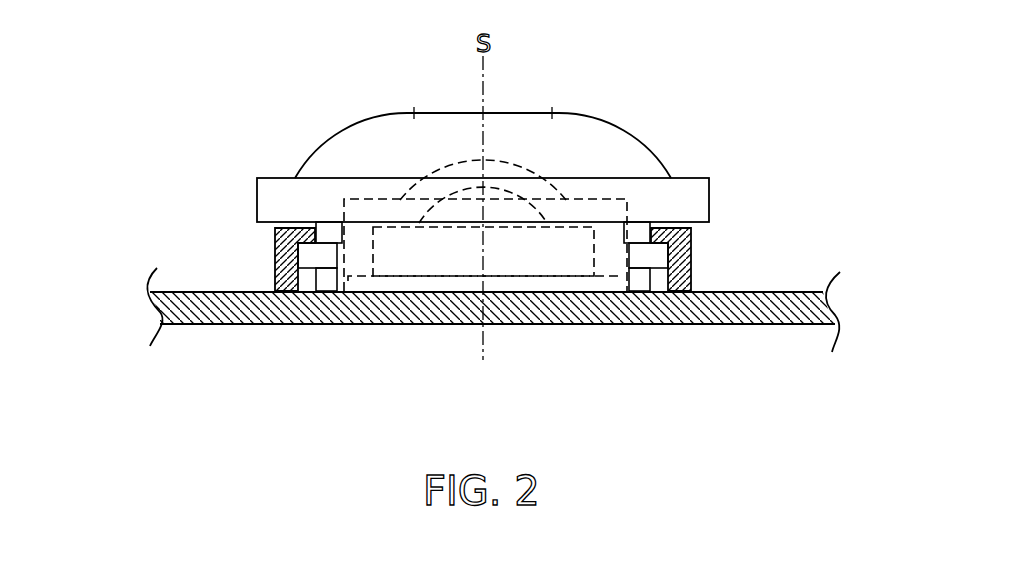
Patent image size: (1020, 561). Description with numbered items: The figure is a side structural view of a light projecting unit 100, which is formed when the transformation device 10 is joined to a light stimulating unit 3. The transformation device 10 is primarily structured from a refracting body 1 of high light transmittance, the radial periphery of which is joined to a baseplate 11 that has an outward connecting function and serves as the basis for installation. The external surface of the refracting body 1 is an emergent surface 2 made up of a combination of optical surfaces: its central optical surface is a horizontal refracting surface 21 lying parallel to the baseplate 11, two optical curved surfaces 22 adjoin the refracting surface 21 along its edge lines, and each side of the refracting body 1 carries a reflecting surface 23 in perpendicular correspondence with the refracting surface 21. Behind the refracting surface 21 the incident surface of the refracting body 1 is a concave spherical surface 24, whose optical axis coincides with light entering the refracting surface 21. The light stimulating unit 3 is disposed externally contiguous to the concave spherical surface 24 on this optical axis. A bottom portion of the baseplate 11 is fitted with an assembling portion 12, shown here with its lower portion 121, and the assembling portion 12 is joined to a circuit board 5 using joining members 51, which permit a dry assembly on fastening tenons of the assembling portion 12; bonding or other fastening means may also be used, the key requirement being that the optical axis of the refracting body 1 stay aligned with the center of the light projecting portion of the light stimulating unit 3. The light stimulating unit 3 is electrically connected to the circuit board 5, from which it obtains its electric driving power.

The light projecting unit 100 is at (780, 171).
The transformation device 10 is at (190, 166).
The refracting body 1 is at (627, 116).
The emergent surface 2 is at (575, 98).
The refracting surface 21 is at (512, 113).
The optical curved surfaces 22 is at (358, 123).
The reflecting surface 23 is at (657, 150).
The concave spherical surface 24 is at (463, 160).
The baseplate 11 is at (280, 197).
The assembling portion 12 is at (250, 242).
The protrusion of support leg 121 is at (315, 258).
The light stimulating unit 3 is at (460, 256).
The circuit board 5 is at (232, 318).
The joining members 51 is at (277, 261).